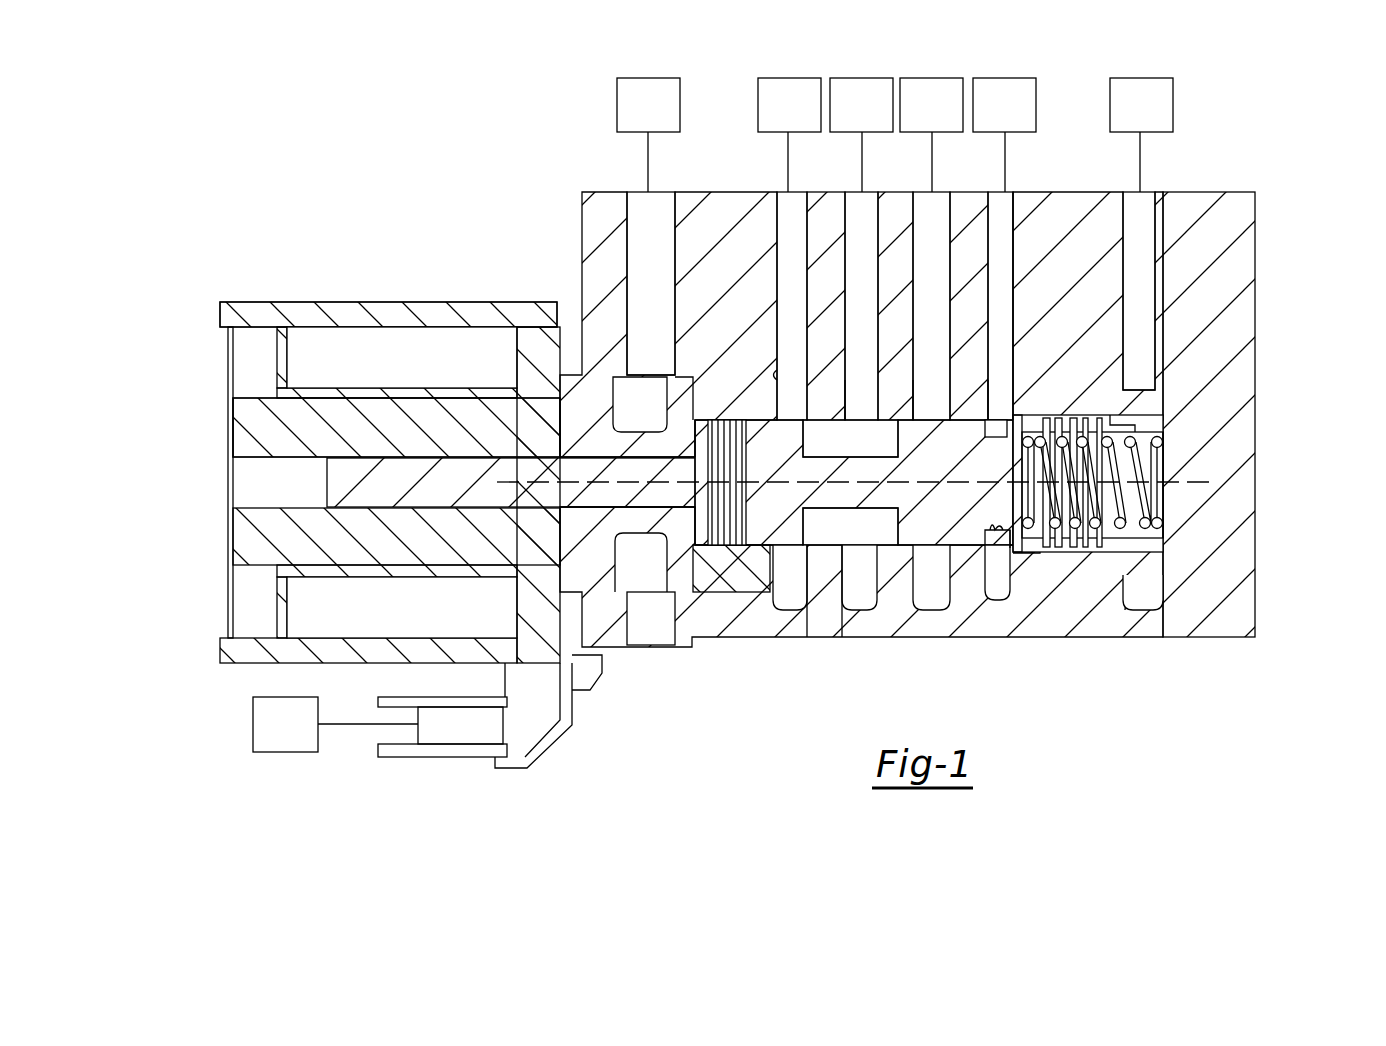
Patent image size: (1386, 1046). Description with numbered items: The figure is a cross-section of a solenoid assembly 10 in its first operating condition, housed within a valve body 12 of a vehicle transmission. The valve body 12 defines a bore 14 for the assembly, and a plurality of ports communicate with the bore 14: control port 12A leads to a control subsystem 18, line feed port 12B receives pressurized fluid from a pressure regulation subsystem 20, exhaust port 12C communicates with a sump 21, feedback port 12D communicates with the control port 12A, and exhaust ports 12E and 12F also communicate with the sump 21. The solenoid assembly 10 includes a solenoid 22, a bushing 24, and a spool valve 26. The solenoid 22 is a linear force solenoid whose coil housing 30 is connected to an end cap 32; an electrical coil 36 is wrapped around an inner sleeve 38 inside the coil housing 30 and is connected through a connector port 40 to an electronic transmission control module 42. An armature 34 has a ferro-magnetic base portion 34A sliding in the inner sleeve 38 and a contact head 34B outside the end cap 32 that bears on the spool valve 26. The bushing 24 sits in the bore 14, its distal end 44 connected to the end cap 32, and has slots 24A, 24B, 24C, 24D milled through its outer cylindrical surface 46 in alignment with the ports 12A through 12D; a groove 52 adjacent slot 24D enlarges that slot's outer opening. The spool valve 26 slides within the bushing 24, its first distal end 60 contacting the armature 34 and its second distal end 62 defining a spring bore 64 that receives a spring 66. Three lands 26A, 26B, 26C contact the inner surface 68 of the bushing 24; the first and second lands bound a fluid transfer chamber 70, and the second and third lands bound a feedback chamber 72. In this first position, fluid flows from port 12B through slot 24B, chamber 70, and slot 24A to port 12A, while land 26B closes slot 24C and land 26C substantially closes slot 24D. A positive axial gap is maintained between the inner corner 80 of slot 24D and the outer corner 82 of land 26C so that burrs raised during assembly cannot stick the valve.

The solenoid assembly 10 is at (377, 125).
The valve body 12 is at (1256, 262).
The control port 12A is at (797, 210).
The line feed port 12B is at (869, 210).
The exhaust port 12C is at (941, 210).
The feedback port 12D is at (1011, 210).
The exhaust port 12E is at (1149, 210).
The exhaust port 12F is at (666, 210).
The bore 14 is at (562, 576).
The control subsystem 18 is at (897, 135).
The pressure regulation subsystem 20 is at (861, 135).
The sump 21 is at (895, 135).
The solenoid 22 is at (312, 300).
The bushing 24 is at (720, 602).
The slot 24A is at (762, 382).
The slot 24B is at (851, 410).
The slot 24C is at (926, 410).
The slot 24D is at (999, 408).
The spool valve 26 is at (785, 550).
The first land 26A is at (803, 520).
The second land 26B is at (897, 428).
The third land 26C is at (1072, 382).
The coil housing 30 is at (467, 300).
The end cap 32 is at (680, 405).
The armature 34 is at (640, 500).
The base portion 34A is at (336, 482).
The contact head 34B is at (712, 495).
The coil 36 is at (392, 350).
The inner sleeve 38 is at (250, 400).
The connector port 40 is at (468, 758).
The electronic transmission control module 42 is at (335, 724).
The distal end 44 is at (666, 603).
The outer cylindrical surface 46 is at (822, 607).
The groove 52 is at (1016, 386).
The first distal end 60 is at (690, 445).
The second distal end 62 is at (1135, 427).
The spring bore 64 is at (1125, 528).
The spring 66 is at (1152, 524).
The inner surface 68 is at (895, 535).
The first fluid chamber 70 is at (878, 530).
The second fluid chamber 72 is at (993, 555).
The inner corner 80 is at (1005, 548).
The outer corner 82 is at (1020, 548).